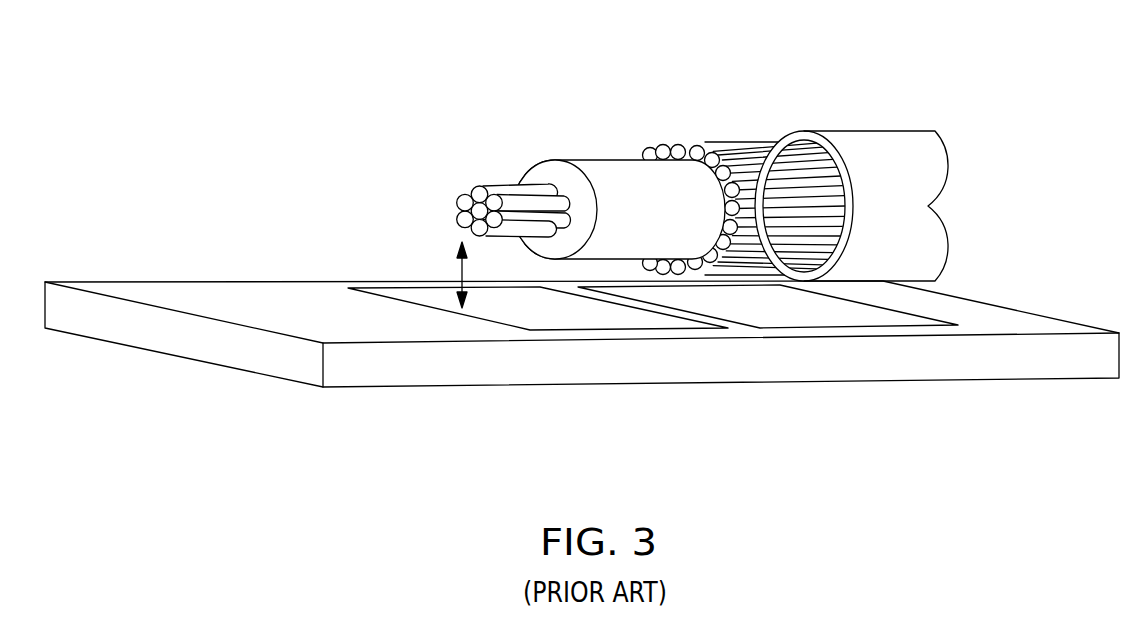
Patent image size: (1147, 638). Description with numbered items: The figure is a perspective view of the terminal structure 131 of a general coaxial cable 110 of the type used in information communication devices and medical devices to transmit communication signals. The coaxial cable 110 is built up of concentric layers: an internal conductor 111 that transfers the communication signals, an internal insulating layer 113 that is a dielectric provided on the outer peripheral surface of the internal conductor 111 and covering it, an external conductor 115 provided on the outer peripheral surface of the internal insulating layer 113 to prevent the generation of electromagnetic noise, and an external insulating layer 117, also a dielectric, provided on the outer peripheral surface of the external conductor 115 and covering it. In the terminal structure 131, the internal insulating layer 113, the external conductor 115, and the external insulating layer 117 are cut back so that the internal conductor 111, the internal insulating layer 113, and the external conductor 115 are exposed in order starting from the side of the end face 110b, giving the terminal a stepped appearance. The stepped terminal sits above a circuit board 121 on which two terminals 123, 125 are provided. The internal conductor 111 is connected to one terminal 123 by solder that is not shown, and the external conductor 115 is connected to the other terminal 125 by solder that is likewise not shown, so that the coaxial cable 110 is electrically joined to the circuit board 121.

The coaxial cable 110 is at (920, 96).
The end face 110b is at (433, 208).
The internal conductor 111 is at (473, 188).
The internal insulating layer 113 is at (606, 180).
The external conductor 115 is at (743, 157).
The external insulating layer 117 is at (845, 148).
The circuit board 121 is at (937, 360).
The terminal 123 is at (593, 318).
The terminal 125 is at (817, 317).
The terminal structure 131 is at (515, 96).